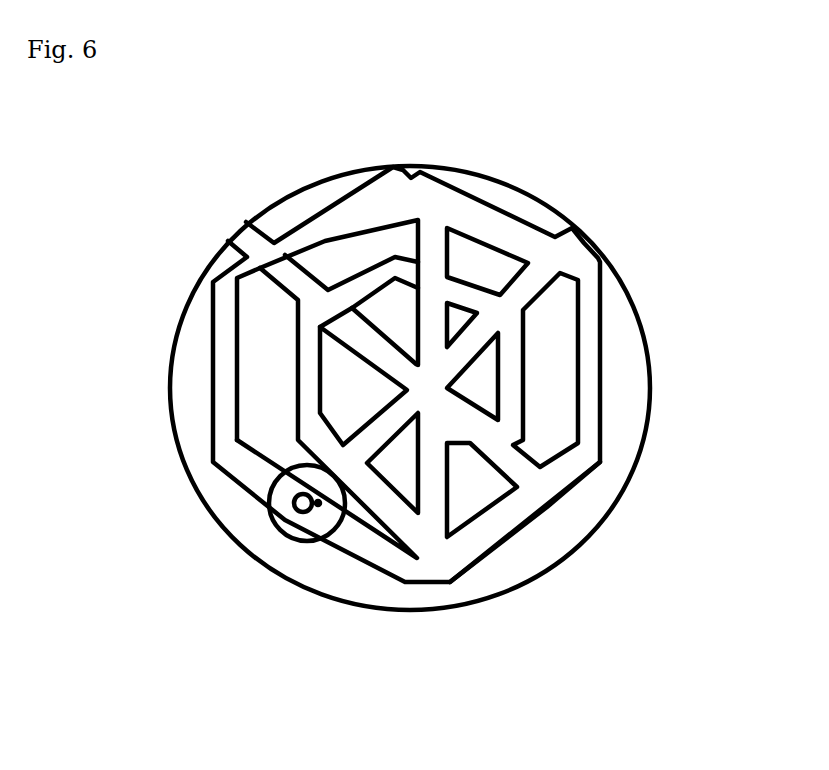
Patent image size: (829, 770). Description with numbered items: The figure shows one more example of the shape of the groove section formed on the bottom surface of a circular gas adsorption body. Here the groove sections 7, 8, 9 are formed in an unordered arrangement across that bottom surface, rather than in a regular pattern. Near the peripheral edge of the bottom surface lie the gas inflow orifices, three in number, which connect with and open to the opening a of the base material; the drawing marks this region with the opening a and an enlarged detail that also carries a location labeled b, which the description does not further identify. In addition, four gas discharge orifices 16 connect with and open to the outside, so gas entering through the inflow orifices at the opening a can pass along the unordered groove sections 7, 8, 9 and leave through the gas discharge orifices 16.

The groove section 7 is at (428, 257).
The groove section 8 is at (305, 373).
The groove section 9 is at (593, 432).
The gas discharge orifice 16 is at (573, 497).
The opening of the base material a is at (272, 486).
The hole b is at (316, 524).